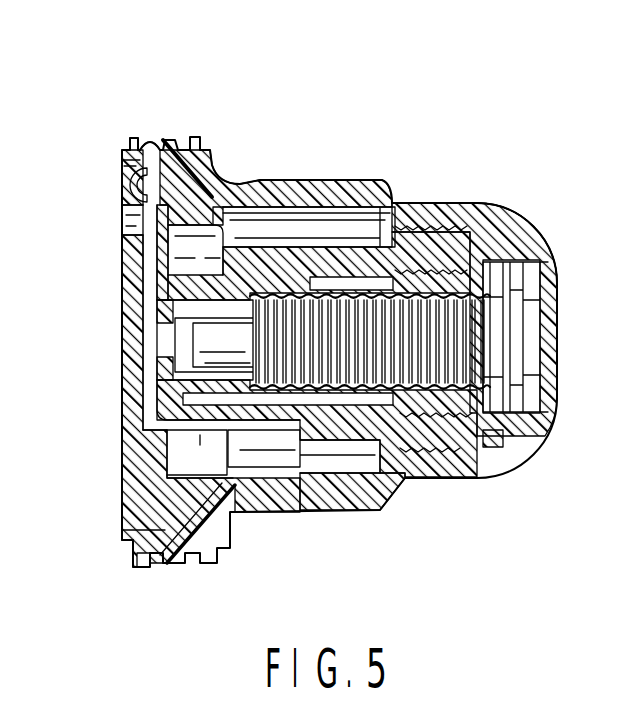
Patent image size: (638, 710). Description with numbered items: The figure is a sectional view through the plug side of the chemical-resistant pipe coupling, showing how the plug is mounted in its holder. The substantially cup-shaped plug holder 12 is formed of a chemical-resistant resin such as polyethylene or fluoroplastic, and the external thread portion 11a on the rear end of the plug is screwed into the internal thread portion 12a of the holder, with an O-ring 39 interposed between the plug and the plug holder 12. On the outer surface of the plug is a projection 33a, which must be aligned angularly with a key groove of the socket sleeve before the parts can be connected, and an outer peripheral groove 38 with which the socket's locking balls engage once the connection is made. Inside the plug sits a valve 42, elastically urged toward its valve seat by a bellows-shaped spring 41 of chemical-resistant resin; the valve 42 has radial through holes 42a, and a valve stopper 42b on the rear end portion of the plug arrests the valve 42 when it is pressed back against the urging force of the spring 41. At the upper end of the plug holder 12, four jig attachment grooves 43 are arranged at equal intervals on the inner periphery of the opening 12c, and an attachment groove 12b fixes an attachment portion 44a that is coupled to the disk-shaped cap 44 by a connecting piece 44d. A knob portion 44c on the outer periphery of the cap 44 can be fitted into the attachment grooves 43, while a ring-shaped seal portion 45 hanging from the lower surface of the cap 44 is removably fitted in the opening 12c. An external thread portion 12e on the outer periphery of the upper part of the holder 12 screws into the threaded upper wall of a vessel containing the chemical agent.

The plug holder 12 is at (387, 198).
The internal thread portion 12a is at (445, 443).
The attachment groove 12b is at (195, 166).
The opening 12c is at (138, 224).
The external thread portion 12e is at (150, 138).
The external thread portion 11a is at (462, 205).
The projection 33a is at (315, 204).
The outer peripheral groove 38 is at (187, 420).
The O-ring 39 is at (503, 438).
The bellows-shaped spring 41 is at (463, 333).
The valve 42 is at (141, 333).
The radial through holes 42a is at (257, 417).
The valve stopper 42b is at (512, 260).
The jig attachment grooves 43 is at (137, 533).
The cap 44 is at (123, 362).
The attachment portion 44a is at (122, 152).
The knob portion 44c is at (127, 497).
The connecting piece 44d is at (132, 192).
The seal portion 45 is at (212, 206).